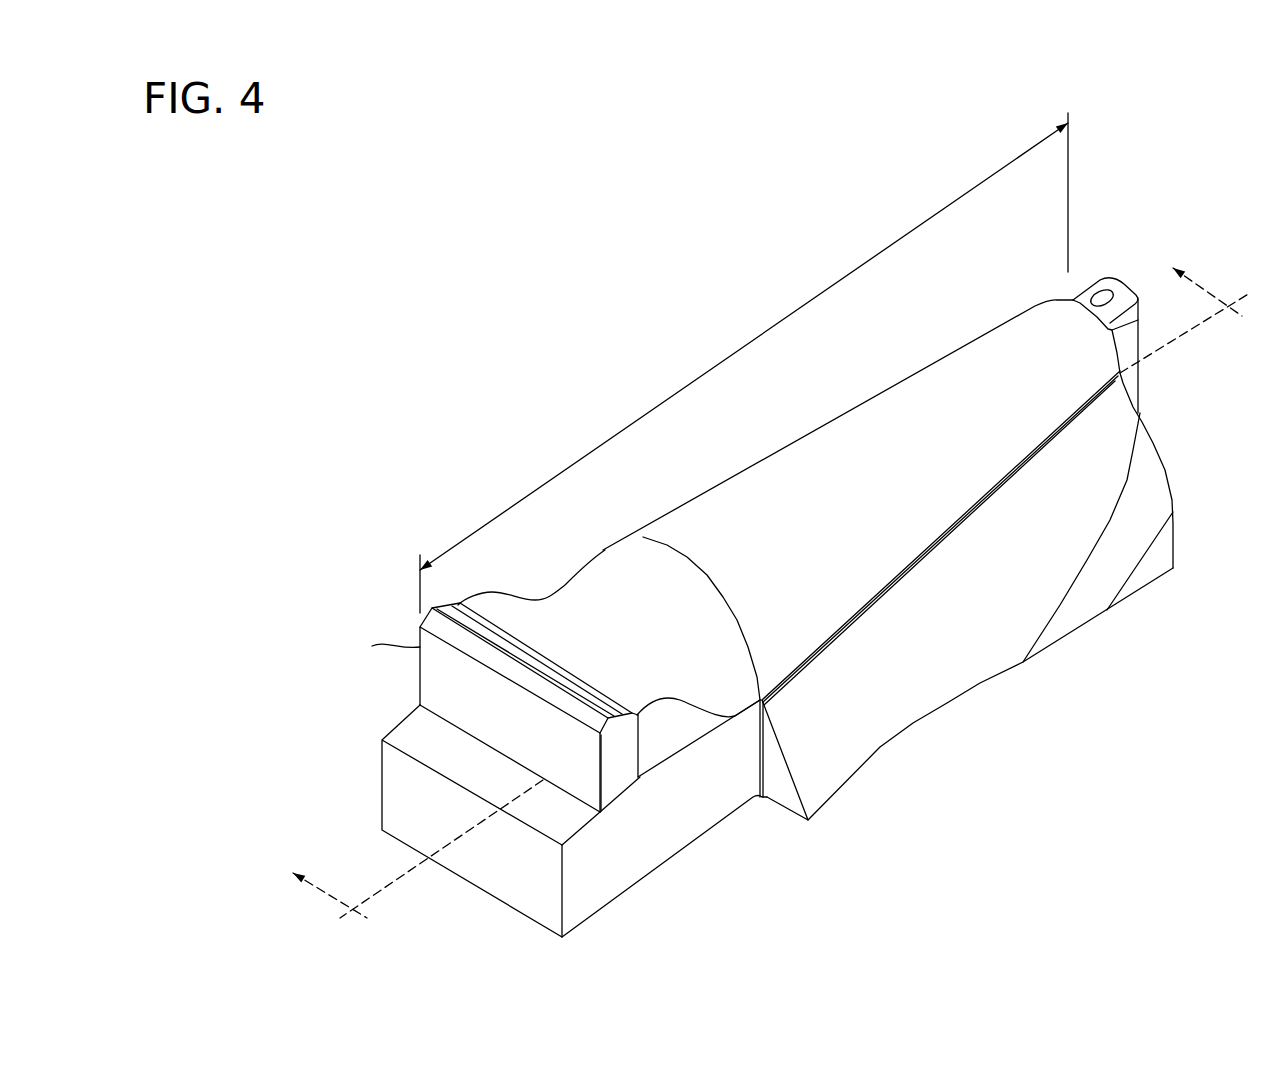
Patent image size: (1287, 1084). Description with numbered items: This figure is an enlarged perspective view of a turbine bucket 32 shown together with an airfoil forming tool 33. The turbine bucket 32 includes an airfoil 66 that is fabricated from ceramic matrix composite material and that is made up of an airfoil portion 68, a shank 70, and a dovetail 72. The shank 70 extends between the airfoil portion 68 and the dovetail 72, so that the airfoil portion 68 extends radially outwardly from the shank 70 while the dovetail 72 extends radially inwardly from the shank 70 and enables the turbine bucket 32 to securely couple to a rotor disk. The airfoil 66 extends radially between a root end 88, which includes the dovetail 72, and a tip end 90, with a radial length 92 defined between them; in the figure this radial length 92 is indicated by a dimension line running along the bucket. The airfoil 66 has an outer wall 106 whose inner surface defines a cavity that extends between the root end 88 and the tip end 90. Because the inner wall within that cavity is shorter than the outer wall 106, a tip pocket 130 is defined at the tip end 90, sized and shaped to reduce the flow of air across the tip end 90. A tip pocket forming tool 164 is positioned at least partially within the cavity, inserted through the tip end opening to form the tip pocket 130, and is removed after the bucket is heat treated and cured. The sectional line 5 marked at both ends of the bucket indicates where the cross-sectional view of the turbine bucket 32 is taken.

The turbine bucket 32 is at (1137, 132).
The airfoil 66 is at (1132, 222).
The tip pocket forming tool 164 is at (1119, 281).
The sectional line 5 is at (781, 607).
The tip end 90 is at (1047, 285).
The radial length 92 is at (757, 335).
The outer wall 106 is at (858, 412).
The airfoil portion 68 is at (787, 450).
The shank 70 is at (607, 558).
The root end 88 is at (392, 615).
The dovetail 72 is at (420, 642).
The airfoil forming tool 33 is at (1173, 467).
The tip pocket 130 is at (1157, 300).